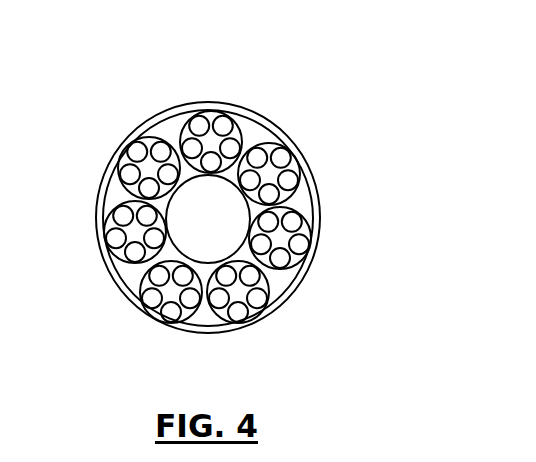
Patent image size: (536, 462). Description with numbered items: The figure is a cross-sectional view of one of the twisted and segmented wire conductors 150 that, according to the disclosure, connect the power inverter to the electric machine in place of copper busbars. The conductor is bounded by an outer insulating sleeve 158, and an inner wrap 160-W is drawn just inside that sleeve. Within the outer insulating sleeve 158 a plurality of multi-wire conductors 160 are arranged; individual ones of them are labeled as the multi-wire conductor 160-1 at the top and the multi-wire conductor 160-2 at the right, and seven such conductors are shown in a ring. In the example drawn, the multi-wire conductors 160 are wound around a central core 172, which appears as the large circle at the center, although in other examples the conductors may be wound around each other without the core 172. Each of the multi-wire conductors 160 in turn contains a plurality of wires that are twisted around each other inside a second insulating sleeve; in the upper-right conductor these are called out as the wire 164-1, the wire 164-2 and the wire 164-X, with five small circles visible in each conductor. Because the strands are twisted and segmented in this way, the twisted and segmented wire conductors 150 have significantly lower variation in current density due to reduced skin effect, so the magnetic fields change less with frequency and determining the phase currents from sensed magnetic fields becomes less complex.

The twisted and segmented wire conductors 150 is at (287, 74).
The outer insulating sleeve 158 is at (115, 155).
The wrap / inner sheath 160-W is at (165, 112).
The multi-wire conductors 160 is at (305, 197).
The multi-wire conductor 160-1 is at (250, 122).
The multi-wire conductor 160-2 is at (301, 195).
The wire 164-X is at (273, 130).
The wire 164-1 is at (296, 172).
The wire 164-2 is at (300, 178).
The core 172 is at (208, 219).